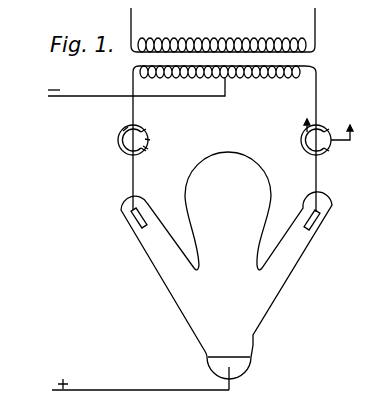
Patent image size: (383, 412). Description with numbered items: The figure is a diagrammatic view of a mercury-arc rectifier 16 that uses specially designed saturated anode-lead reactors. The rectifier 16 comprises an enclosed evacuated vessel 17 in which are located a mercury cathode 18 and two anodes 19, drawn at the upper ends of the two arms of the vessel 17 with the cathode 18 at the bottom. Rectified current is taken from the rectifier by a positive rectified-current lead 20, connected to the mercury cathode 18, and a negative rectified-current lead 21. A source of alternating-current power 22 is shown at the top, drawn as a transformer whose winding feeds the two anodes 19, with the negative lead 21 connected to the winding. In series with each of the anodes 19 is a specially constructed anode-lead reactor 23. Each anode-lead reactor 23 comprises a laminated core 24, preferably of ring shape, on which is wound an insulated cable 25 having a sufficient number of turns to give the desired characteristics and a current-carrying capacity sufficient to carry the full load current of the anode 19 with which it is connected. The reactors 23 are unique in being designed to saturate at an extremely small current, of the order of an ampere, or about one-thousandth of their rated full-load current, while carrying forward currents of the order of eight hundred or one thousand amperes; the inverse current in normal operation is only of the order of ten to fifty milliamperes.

The mercury-arc rectifier 16 is at (232, 267).
The enclosed evacuated vessel 17 is at (296, 273).
The mercury cathode 18 is at (245, 370).
The anodes 19 is at (133, 216).
The positive rectified-current lead 20 is at (100, 390).
The negative rectified-current lead 21 is at (76, 97).
The source of alternating-current power 22 is at (321, 58).
The anode-lead reactor 23 is at (177, 133).
The laminated core 24 is at (118, 149).
The insulated cable 25 is at (151, 149).